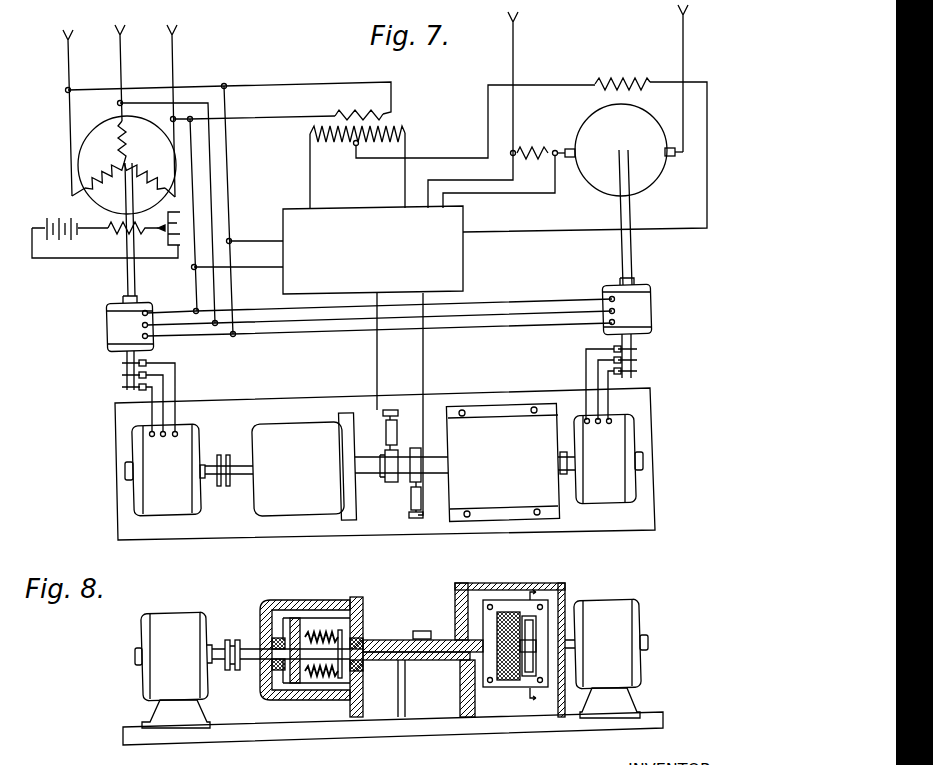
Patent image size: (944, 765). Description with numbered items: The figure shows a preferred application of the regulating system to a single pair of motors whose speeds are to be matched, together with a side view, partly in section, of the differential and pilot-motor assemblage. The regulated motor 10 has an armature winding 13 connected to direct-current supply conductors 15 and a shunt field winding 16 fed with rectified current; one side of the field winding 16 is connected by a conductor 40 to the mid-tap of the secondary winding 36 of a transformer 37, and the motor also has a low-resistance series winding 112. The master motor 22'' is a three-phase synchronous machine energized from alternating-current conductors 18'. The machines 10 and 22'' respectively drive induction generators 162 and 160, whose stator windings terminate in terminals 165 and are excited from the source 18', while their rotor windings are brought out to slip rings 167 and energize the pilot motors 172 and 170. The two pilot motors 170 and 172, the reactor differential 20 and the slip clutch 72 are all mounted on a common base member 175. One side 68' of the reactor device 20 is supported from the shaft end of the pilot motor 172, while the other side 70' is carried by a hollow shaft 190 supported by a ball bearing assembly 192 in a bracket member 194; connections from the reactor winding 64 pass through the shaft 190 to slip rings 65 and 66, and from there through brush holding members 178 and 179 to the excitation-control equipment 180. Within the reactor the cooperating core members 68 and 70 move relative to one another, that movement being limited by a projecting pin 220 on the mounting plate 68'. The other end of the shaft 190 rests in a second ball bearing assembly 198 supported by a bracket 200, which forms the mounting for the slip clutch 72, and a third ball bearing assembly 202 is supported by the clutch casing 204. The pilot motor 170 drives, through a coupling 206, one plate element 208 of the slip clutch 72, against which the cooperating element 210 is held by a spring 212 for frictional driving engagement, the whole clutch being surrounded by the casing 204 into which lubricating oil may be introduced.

In FIG. 7, the alternating current source conductors 18' is at (120, 111).
In FIG. 7, the master motor 22'' is at (101, 187).
In FIG. 7, the transformer 37 is at (381, 115).
In FIG. 7, the secondary winding 36 is at (348, 148).
In FIG. 7, the conductor 40 is at (488, 132).
In FIG. 7, the direct-current supply circuit conductors 15 is at (513, 40).
In FIG. 7, the shunt field winding 16 is at (623, 74).
In FIG. 7, the regulated motor 10 is at (619, 187).
In FIG. 7, the series winding 112 is at (534, 160).
In FIG. 7, the armature winding 13 is at (666, 170).
In FIG. 7, the excitation-control equipment 180 is at (466, 250).
In FIG. 7, the induction generator 160 is at (104, 324).
In FIG. 7, the induction generator 162 is at (647, 306).
In FIG. 7, the terminals 165 is at (148, 335).
In FIG. 7, the slip rings 167 is at (122, 387).
In FIG. 7, the common base member 175 is at (657, 504).
In FIG. 8, the common base member 175 is at (665, 716).
In FIG. 7, the pilot motor 170 is at (189, 470).
In FIG. 8, the pilot motor 170 is at (180, 670).
In FIG. 7, the pilot motor 172 is at (608, 459).
In FIG. 8, the pilot motor 172 is at (606, 658).
In FIG. 7, the casing 204 is at (287, 425).
In FIG. 8, the casing 204 is at (278, 603).
In FIG. 7, the slip clutch 72 is at (298, 469).
In FIG. 8, the slip clutch 72 is at (305, 661).
In FIG. 7, the bracket 200 is at (345, 518).
In FIG. 8, the bracket 200 is at (356, 597).
In FIG. 7, the shaft 190 is at (370, 462).
In FIG. 8, the shaft 190 is at (378, 640).
In FIG. 7, the slip ring 66 is at (390, 483).
In FIG. 8, the slip ring 66 is at (405, 617).
In FIG. 7, the slip ring 65 is at (415, 448).
In FIG. 8, the slip ring 65 is at (425, 630).
In FIG. 7, the brush holding member 179 is at (386, 425).
In FIG. 7, the brush holding member 178 is at (408, 505).
In FIG. 7, the reactor differential device 20 is at (502, 462).
In FIG. 8, the reactor differential device 20 is at (502, 632).
In FIG. 8, the coupling 206 is at (236, 640).
In FIG. 8, the cooperating element 210 is at (301, 620).
In FIG. 8, the third ball bearing assembly 202 is at (275, 666).
In FIG. 8, the plate element 208 is at (278, 690).
In FIG. 8, the spring 212 is at (322, 668).
In FIG. 8, the second ball bearing assembly 198 is at (366, 665).
In FIG. 8, the ball bearing assembly 192 is at (466, 661).
In FIG. 8, the bracket member 194 is at (461, 697).
In FIG. 8, the projecting pin 220 is at (437, 712).
In FIG. 8, the winding 64 is at (500, 612).
In FIG. 8, the core member 70 is at (520, 614).
In FIG. 8, the other side of reactor device 70' is at (497, 702).
In FIG. 8, the core member 68 is at (555, 637).
In FIG. 8, the mounting plate 68' is at (554, 731).